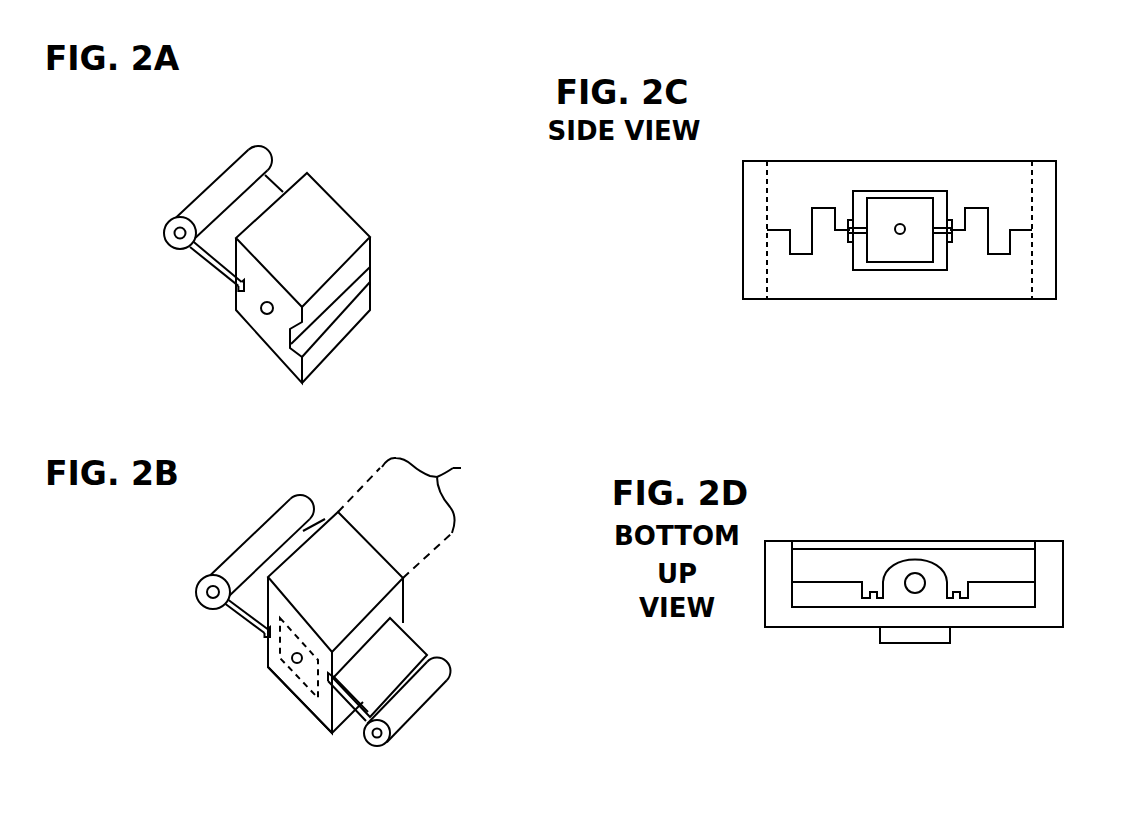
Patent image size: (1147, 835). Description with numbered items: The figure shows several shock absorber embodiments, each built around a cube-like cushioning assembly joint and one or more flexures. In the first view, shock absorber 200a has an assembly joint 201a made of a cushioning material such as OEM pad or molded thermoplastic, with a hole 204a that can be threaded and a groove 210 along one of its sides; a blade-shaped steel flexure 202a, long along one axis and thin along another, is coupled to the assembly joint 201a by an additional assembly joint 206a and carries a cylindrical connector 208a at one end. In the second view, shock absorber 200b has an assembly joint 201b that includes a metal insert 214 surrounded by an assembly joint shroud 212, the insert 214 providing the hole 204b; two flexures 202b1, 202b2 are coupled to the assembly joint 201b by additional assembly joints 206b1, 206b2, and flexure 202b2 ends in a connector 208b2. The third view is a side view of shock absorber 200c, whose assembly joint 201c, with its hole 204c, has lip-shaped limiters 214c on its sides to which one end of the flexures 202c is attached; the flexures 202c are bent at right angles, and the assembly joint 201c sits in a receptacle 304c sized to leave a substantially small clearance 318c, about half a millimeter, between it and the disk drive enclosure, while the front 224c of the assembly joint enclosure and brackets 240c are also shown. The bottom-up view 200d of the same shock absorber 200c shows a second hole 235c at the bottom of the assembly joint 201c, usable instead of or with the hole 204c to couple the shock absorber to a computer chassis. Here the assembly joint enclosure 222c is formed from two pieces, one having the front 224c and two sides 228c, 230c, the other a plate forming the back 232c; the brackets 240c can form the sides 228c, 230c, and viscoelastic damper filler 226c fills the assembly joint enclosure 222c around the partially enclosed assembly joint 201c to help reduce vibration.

In FIG. 2A, the shock absorber 200a is at (289, 98).
In FIG. 2A, the assembly joint 201a is at (322, 222).
In FIG. 2A, the flexure 202a is at (232, 228).
In FIG. 2A, the hole 204a is at (265, 314).
In FIG. 2A, the assembly joint 206a is at (237, 290).
In FIG. 2A, the connector 208a is at (212, 204).
In FIG. 2A, the groove 210 is at (352, 293).
In FIG. 2B, the shock absorber 200b is at (527, 423).
In FIG. 2B, the assembly joint 201b is at (419, 595).
In FIG. 2B, the flexure 202b1 is at (257, 585).
In FIG. 2B, the flexure 202b2 is at (403, 655).
In FIG. 2B, the hole 204b is at (294, 661).
In FIG. 2B, the assembly joint 206b1 is at (266, 634).
In FIG. 2B, the assembly joint 206b2 is at (329, 684).
In FIG. 2B, the connector 208b2 is at (417, 688).
In FIG. 2B, the assembly joint shroud 212 is at (280, 685).
In FIG. 2B, the insert 214 is at (305, 695).
In FIG. 2C, the shock absorber 200c is at (1079, 95).
In FIG. 2C, the assembly joint 201c is at (877, 210).
In FIG. 2D, the assembly joint 201c is at (895, 592).
In FIG. 2C, the flexures 202c is at (997, 255).
In FIG. 2C, the hole 204c is at (902, 224).
In FIG. 2C, the limiters 214c is at (937, 231).
In FIG. 2D, the limiters 214c is at (825, 582).
In FIG. 2C, the front of assembly joint enclosure 224c is at (787, 183).
In FIG. 2D, the front of assembly joint enclosure 224c is at (1032, 618).
In FIG. 2C, the brackets 240c is at (1048, 257).
In FIG. 2C, the receptacle 304c is at (937, 191).
In FIG. 2C, the clearance 318c is at (861, 199).
In FIG. 2D, the assembly joint enclosure bottom up view (FIG. 2D) 200d is at (1032, 508).
In FIG. 2D, the assembly joint enclosure 222c is at (792, 617).
In FIG. 2D, the damper filler 226c is at (1010, 563).
In FIG. 2D, the side 228c is at (778, 592).
In FIG. 2D, the side 230c is at (1048, 592).
In FIG. 2D, the back 232c is at (812, 540).
In FIG. 2D, the second hole 235c is at (915, 593).